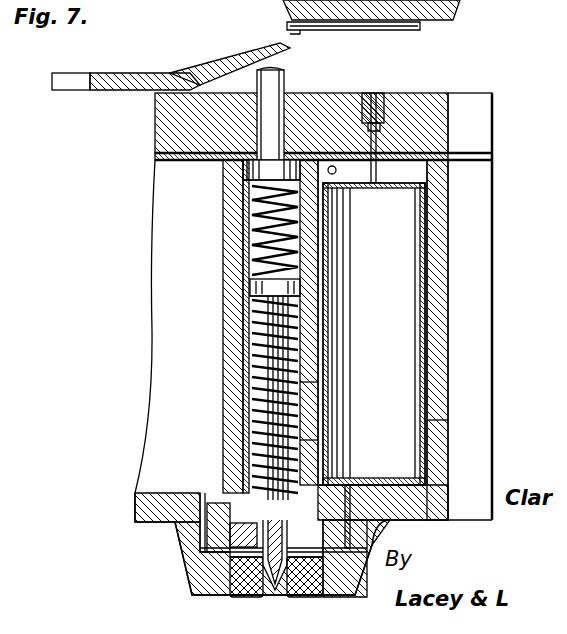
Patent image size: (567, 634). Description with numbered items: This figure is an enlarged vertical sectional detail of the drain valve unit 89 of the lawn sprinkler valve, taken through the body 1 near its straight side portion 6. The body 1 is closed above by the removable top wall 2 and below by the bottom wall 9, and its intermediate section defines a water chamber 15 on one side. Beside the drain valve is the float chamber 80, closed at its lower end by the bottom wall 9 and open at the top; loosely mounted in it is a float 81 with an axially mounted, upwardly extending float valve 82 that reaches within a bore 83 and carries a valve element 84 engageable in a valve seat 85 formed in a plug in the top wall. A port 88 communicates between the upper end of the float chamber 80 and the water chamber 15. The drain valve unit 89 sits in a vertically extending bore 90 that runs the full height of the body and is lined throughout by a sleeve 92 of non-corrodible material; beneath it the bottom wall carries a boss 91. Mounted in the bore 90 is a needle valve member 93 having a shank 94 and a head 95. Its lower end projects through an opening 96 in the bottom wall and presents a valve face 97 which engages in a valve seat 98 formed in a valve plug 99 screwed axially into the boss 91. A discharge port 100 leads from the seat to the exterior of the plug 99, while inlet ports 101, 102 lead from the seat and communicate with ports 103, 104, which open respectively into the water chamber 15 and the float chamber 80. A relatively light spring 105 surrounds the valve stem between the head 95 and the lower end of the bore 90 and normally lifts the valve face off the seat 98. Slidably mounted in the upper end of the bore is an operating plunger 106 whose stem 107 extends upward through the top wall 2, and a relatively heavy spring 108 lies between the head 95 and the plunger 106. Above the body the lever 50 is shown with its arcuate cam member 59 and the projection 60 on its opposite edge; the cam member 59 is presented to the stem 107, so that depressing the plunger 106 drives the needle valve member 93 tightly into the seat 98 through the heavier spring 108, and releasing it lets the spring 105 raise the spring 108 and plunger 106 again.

The body 1 is at (487, 229).
The top wall 2 is at (165, 115).
The side portion 6 is at (480, 262).
The bottom wall 9 is at (135, 505).
The water chamber 15 is at (165, 336).
The lever 50 is at (143, 68).
The cam member 59 is at (228, 62).
The projection 60 is at (68, 80).
The float chamber 80 is at (420, 172).
The float 81 is at (430, 350).
The float valve 82 is at (343, 173).
The bore 83 is at (388, 160).
The valve element 84 is at (384, 132).
The valve seat 85 is at (373, 92).
The port 88 is at (350, 215).
The drain valve unit 89 is at (322, 298).
The bore 90 is at (300, 454).
The boss 91 is at (265, 560).
The sleeve 92 is at (325, 392).
The needle valve member 93 is at (410, 426).
The shank 94 is at (247, 390).
The head 95 is at (252, 290).
The opening 96 is at (225, 532).
The valve face 97 is at (356, 598).
The valve seat 98 is at (262, 580).
The valve plug 99 is at (412, 30).
The discharge port 100 is at (251, 574).
The inlet port 101 is at (215, 597).
The inlet port 102 is at (377, 532).
The port 103 is at (248, 542).
The port 104 is at (347, 506).
The spring 105 is at (243, 370).
The operating plunger 106 is at (252, 182).
The stem 107 is at (287, 84).
The spring 108 is at (262, 228).